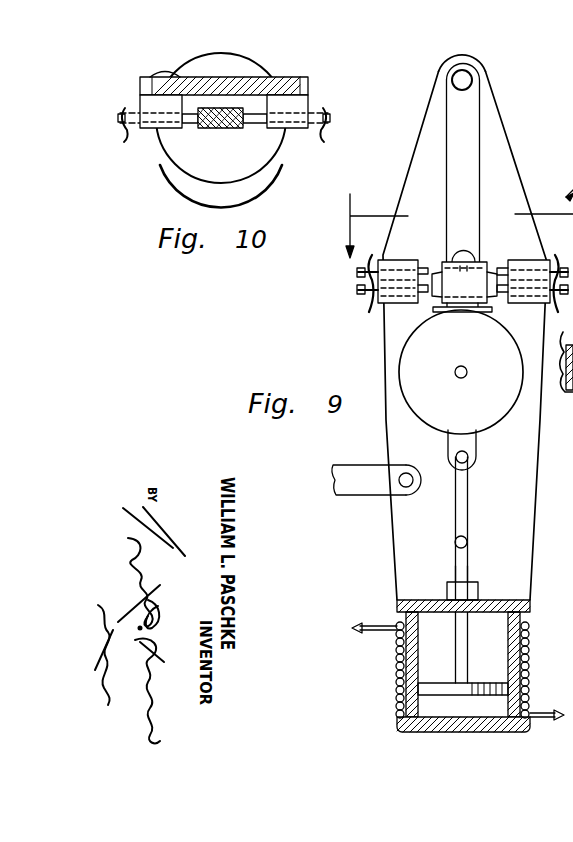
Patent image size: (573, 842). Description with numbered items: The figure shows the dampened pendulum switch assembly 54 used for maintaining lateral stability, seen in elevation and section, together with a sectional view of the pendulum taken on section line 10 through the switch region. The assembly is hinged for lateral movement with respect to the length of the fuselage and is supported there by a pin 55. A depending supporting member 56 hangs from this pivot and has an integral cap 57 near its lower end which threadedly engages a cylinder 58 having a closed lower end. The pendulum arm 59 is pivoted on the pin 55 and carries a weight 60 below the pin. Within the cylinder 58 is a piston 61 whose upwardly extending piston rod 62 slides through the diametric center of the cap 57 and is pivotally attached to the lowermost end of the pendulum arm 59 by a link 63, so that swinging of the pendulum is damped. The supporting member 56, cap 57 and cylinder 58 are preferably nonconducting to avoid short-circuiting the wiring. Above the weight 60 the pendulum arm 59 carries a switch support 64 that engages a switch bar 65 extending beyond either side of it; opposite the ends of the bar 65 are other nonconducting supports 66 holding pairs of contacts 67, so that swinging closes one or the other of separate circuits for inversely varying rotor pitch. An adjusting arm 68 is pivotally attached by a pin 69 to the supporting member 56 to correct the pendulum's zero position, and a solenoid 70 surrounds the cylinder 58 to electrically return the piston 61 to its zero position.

In FIG. 9, the section line 10— 10 is at (456, 217).
In FIG. 9, the dampened pendulum switch assembly 54 is at (404, 136).
In FIG. 9, the pin 55 is at (465, 80).
In FIG. 9, the depending supporting member 56 is at (507, 140).
In FIG. 10, the cap 57 is at (192, 148).
In FIG. 9, the cap 57 is at (500, 606).
In FIG. 9, the cylinder 58 is at (522, 732).
In FIG. 10, the pendulum arm 59 is at (221, 128).
In FIG. 9, the pendulum arm 59 is at (470, 178).
In FIG. 9, the weight 60 is at (485, 414).
In FIG. 9, the piston 61 is at (440, 690).
In FIG. 9, the piston rod 62 is at (456, 568).
In FIG. 9, the link 63 is at (465, 505).
In FIG. 9, the switch support 64 is at (446, 262).
In FIG. 9, the switch bar 65 is at (490, 300).
In FIG. 10, the supports 66 is at (150, 100).
In FIG. 9, the supports 66 is at (538, 272).
In FIG. 9, the pairs of contacts 67 is at (422, 262).
In FIG. 10, the adjusting arm 68 is at (158, 74).
In FIG. 9, the adjusting arm 68 is at (356, 480).
In FIG. 9, the pin 69 is at (408, 488).
In FIG. 9, the solenoid 70 is at (528, 660).